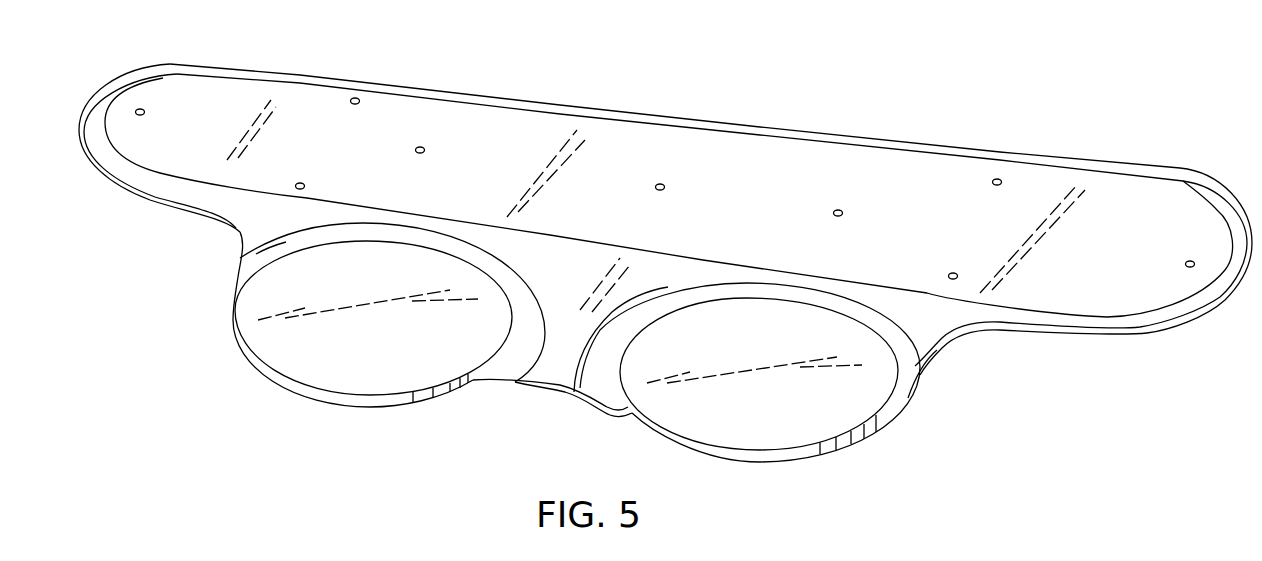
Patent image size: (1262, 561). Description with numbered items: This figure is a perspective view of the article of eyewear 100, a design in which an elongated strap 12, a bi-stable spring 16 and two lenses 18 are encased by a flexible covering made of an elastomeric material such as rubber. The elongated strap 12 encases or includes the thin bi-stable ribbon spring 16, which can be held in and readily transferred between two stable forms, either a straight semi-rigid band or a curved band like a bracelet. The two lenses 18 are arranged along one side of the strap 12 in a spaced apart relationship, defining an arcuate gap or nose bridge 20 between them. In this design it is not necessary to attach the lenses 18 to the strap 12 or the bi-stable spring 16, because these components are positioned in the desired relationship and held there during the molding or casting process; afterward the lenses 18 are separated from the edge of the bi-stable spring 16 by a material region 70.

The article of eyewear 100 is at (665, 278).
The elongated strap 12 is at (1183, 186).
The bi-stable ribbon spring 16 is at (395, 104).
The lenses 18 is at (315, 399).
The nose bridge 20 is at (543, 391).
The material region 70 is at (237, 283).